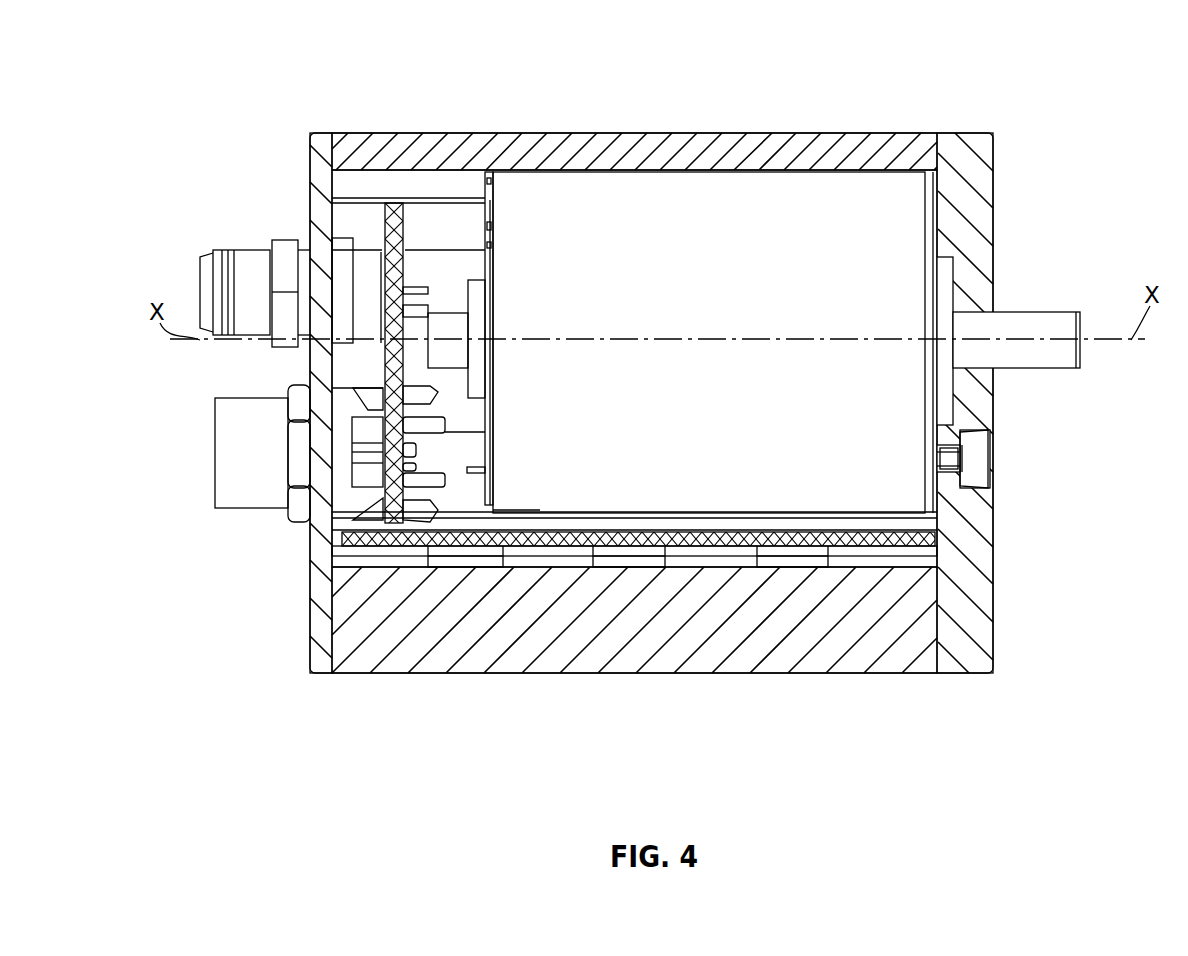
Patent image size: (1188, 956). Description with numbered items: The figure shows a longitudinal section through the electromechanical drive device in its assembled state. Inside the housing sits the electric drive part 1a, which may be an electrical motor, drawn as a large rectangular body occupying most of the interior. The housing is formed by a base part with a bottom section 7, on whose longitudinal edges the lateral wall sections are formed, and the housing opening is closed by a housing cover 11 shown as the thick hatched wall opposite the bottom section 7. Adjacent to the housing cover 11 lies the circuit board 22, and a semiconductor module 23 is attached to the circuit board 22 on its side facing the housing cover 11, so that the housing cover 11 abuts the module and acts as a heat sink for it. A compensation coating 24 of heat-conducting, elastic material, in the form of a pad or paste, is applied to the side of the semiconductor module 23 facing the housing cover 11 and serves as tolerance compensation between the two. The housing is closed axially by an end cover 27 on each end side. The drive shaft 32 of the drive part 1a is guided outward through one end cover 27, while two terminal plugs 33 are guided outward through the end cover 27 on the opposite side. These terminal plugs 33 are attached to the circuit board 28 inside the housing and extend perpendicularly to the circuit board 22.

The electric drive part 1a is at (751, 223).
The bottom section 7 is at (617, 150).
The housing cover 11 is at (862, 632).
The circuit board 22 is at (907, 538).
The semiconductor module 23 is at (620, 556).
The compensation coating 24 is at (462, 557).
The end cover 27 is at (318, 210).
The circuit board 28 is at (397, 236).
The drive shaft 32 is at (1037, 322).
The terminal plug 33 is at (278, 315).